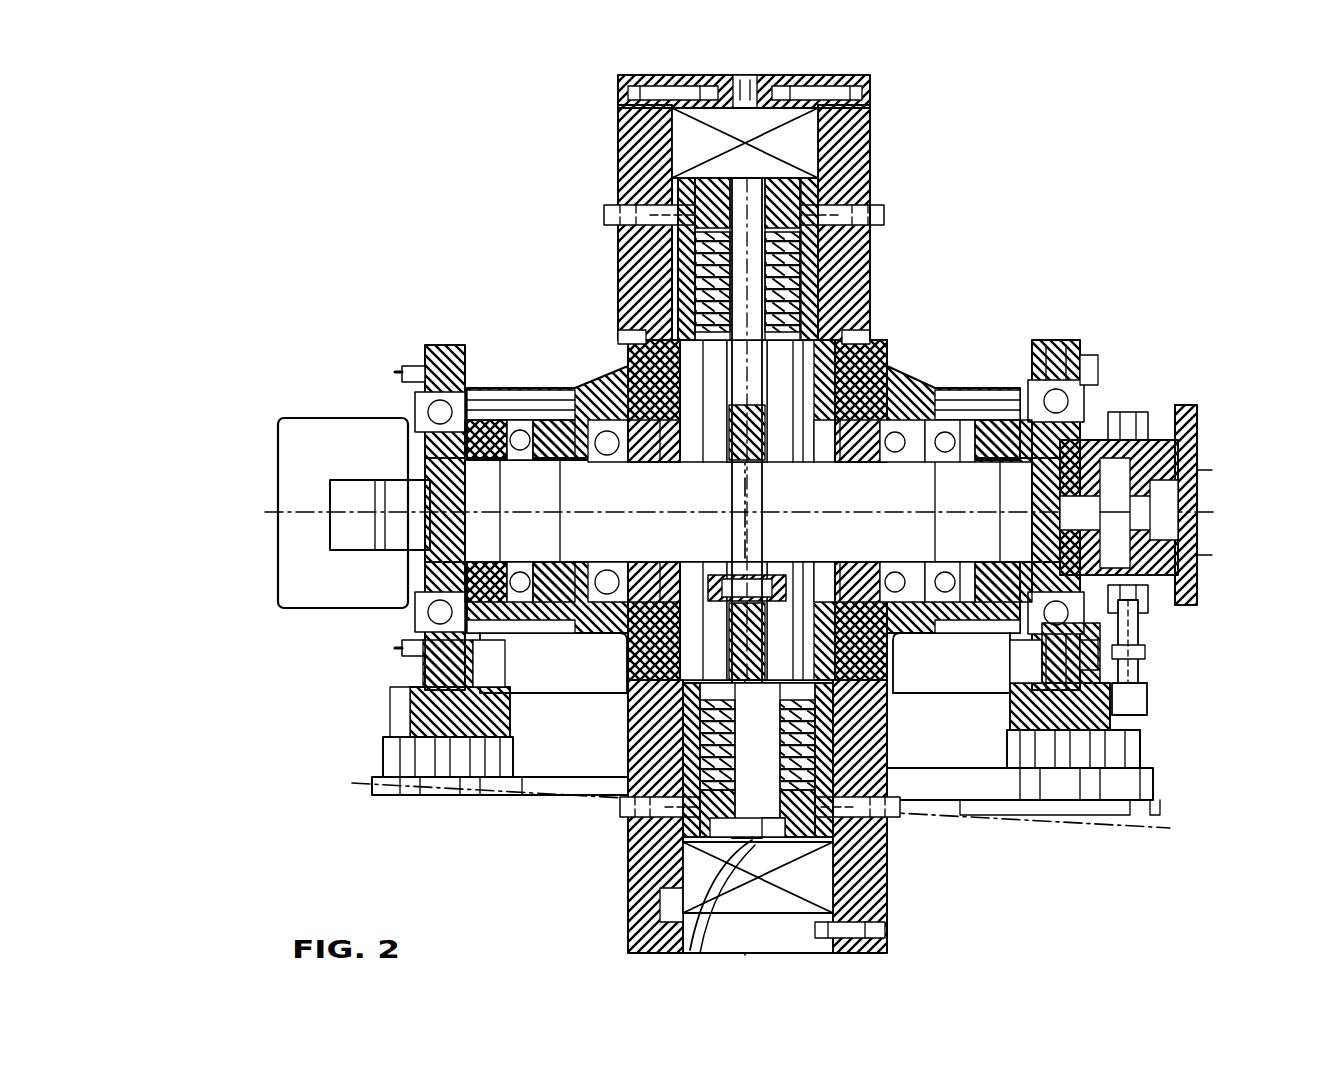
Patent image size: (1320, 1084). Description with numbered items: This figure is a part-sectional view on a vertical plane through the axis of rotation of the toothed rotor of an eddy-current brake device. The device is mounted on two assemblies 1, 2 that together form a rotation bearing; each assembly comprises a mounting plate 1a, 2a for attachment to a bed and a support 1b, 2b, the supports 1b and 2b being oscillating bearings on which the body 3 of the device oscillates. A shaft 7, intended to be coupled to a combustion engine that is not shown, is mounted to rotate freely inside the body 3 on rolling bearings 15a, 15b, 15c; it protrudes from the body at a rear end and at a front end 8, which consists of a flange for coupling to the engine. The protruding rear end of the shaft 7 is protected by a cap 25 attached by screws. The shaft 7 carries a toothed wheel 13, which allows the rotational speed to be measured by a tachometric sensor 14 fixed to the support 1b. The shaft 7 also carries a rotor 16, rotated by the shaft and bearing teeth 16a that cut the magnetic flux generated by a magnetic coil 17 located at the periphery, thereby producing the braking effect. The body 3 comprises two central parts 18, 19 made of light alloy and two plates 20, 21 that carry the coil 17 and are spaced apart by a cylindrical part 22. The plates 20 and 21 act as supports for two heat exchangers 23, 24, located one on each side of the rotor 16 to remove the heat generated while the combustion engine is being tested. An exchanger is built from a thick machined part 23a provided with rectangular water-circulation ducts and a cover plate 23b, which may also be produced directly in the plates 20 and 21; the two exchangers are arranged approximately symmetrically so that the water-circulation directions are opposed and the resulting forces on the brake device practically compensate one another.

The assembly forming a rotation bearing 1 is at (1064, 330).
The mounting plate 1a is at (1138, 752).
The support 1b is at (1112, 715).
The assembly forming a rotation bearing 2 is at (440, 335).
The mounting plate 2a is at (385, 748).
The support 2b is at (400, 680).
The body 3 is at (888, 178).
The shaft 7 is at (350, 495).
The front end 8 is at (1212, 462).
The toothed wheel 13 is at (1126, 412).
The tachometric sensor 14 is at (1140, 632).
The rolling bearing 15a is at (512, 420).
The rolling bearing 15b is at (940, 420).
The rolling bearing 15c is at (992, 420).
The rotor 16 is at (742, 638).
The teeth 16a is at (872, 230).
The magnetic coil 17 is at (878, 912).
The central part 18 is at (608, 386).
The central part 19 is at (886, 370).
The plate 20 is at (640, 150).
The plate 21 is at (855, 112).
The cylindrical part 22 is at (832, 148).
The exchanger 23 is at (690, 898).
The part of heat exchanger 23a is at (700, 950).
The cover plate 23b is at (700, 873).
The exchanger 24 is at (842, 880).
The cap 25 is at (308, 418).